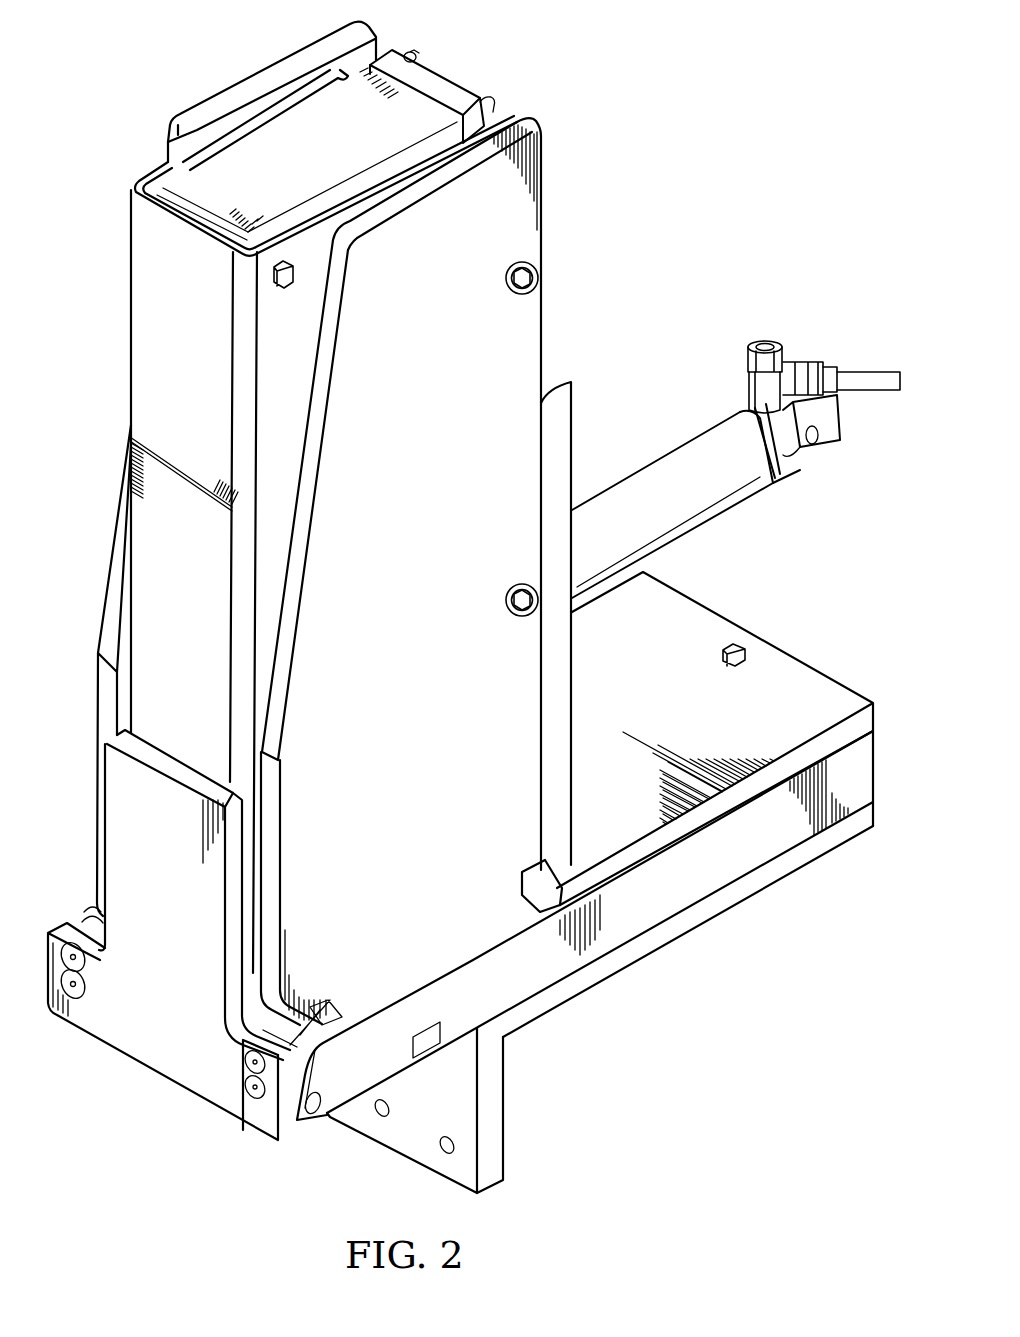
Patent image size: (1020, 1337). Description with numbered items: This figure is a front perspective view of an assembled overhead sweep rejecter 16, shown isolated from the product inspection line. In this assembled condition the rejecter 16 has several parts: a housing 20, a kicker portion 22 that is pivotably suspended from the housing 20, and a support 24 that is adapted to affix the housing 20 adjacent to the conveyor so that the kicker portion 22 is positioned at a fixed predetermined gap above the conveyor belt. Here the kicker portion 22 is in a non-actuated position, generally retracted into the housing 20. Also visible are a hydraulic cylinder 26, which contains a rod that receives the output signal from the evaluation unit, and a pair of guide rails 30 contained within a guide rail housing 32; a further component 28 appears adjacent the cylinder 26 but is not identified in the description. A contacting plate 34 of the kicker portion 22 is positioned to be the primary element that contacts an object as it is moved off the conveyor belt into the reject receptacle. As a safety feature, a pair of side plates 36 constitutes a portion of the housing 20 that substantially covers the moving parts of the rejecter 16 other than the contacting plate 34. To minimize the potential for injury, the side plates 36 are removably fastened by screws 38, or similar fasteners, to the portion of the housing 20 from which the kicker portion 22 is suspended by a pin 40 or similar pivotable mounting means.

The overhead sweep rejecter 16 is at (760, 73).
The housing 20 is at (435, 74).
The kicker portion 22 is at (131, 322).
The support 24 is at (503, 1090).
The hydraulic cylinder 26 is at (650, 462).
The air fitting 28 is at (868, 372).
The guide rails 30 is at (733, 870).
The guide rail housing 32 is at (762, 636).
The contacting plate 34 is at (163, 1068).
The side plates 36 is at (438, 592).
The screws 38 is at (530, 283).
The pin 40 is at (292, 275).